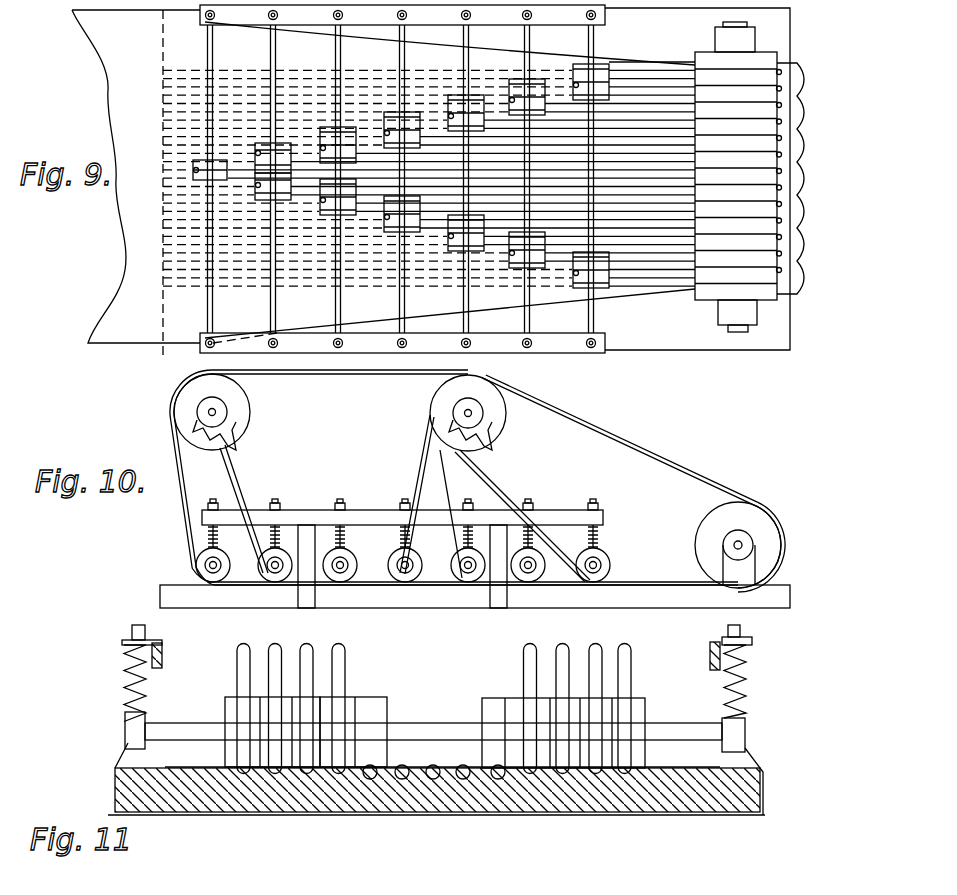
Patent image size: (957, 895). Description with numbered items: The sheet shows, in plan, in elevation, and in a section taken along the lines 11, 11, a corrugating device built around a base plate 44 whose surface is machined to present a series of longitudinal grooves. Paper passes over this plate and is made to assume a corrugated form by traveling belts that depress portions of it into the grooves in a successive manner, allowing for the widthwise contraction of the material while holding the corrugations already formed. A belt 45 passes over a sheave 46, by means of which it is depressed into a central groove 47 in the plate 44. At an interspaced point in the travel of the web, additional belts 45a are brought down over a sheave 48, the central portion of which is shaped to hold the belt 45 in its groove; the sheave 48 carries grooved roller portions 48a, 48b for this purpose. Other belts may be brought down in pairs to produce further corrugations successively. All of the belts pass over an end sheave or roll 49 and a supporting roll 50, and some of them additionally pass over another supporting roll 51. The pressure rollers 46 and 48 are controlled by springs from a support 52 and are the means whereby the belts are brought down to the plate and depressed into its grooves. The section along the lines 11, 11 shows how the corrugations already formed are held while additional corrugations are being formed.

In FIG. 9, the base plate 44 is at (645, 338).
In FIG. 10, the base plate 44 is at (648, 603).
In FIG. 11, the base plate 44 is at (607, 808).
In FIG. 9, the belt 45 is at (193, 169).
In FIG. 11, the belt 45 is at (433, 767).
In FIG. 9, the additional belts 45a is at (253, 153).
In FIG. 9, the sheave 46 is at (200, 178).
In FIG. 10, the sheave 46 is at (197, 563).
In FIG. 9, the central groove 47 is at (193, 171).
In FIG. 11, the central groove 47 is at (443, 795).
In FIG. 9, the sheave 48 is at (270, 178).
In FIG. 10, the sheave 48 is at (287, 552).
In FIG. 9, the roller block 48a is at (337, 197).
In FIG. 9, the roller block 48b is at (402, 232).
In FIG. 11, the roller block 48b is at (377, 702).
In FIG. 9, the end sheave 49 is at (698, 58).
In FIG. 10, the end sheave 49 is at (727, 513).
In FIG. 10, the supporting roll 50 is at (502, 418).
In FIG. 10, the supporting roll 51 is at (240, 422).
In FIG. 10, the support 52 is at (373, 510).
In FIG. 10, the section lines 11 is at (393, 640).